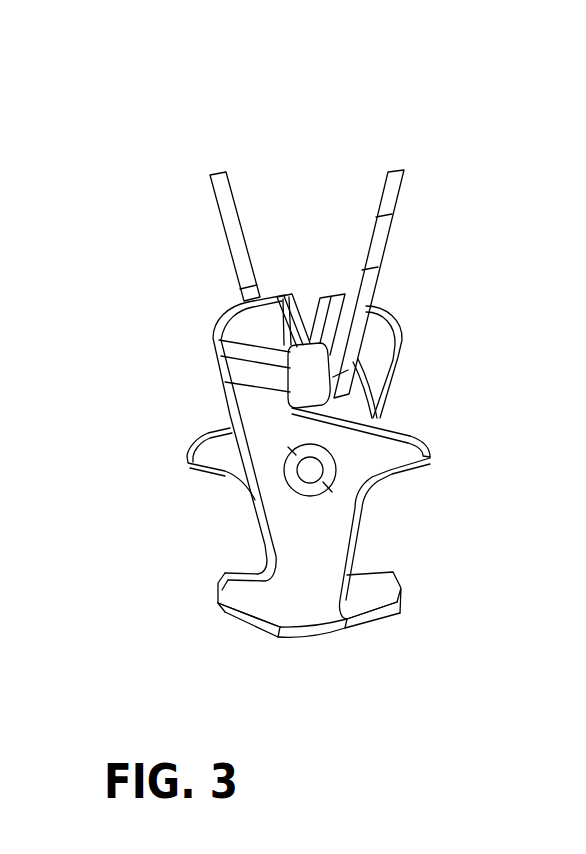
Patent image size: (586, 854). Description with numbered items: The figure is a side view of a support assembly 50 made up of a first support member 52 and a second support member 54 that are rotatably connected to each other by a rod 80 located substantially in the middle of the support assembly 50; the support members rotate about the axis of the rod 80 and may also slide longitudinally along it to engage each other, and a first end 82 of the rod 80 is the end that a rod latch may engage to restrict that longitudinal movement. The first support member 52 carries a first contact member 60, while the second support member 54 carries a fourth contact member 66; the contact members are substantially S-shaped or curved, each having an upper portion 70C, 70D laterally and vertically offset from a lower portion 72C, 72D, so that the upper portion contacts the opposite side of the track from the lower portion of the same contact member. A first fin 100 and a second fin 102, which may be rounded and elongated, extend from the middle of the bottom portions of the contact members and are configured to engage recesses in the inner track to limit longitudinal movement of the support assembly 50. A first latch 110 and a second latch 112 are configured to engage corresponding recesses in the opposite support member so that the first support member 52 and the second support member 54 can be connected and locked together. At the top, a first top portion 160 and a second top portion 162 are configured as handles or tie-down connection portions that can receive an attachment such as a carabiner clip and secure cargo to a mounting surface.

The support assembly 50 is at (301, 114).
The first support member 52 is at (414, 268).
The second support member 54 is at (199, 276).
The first contact member 60 is at (372, 347).
The fourth contact member 66 is at (322, 540).
The upper portion 70C is at (216, 455).
The upper portion 70D is at (403, 450).
The lower portion 72C is at (362, 597).
The lower portion 72D is at (252, 593).
The rod 80 is at (298, 470).
The first end 82 is at (292, 496).
The first fin 100 is at (227, 617).
The second fin 102 is at (380, 620).
The first latch 110 is at (325, 296).
The second latch 112 is at (288, 296).
The first top portion 160 is at (398, 170).
The second top portion 162 is at (215, 170).